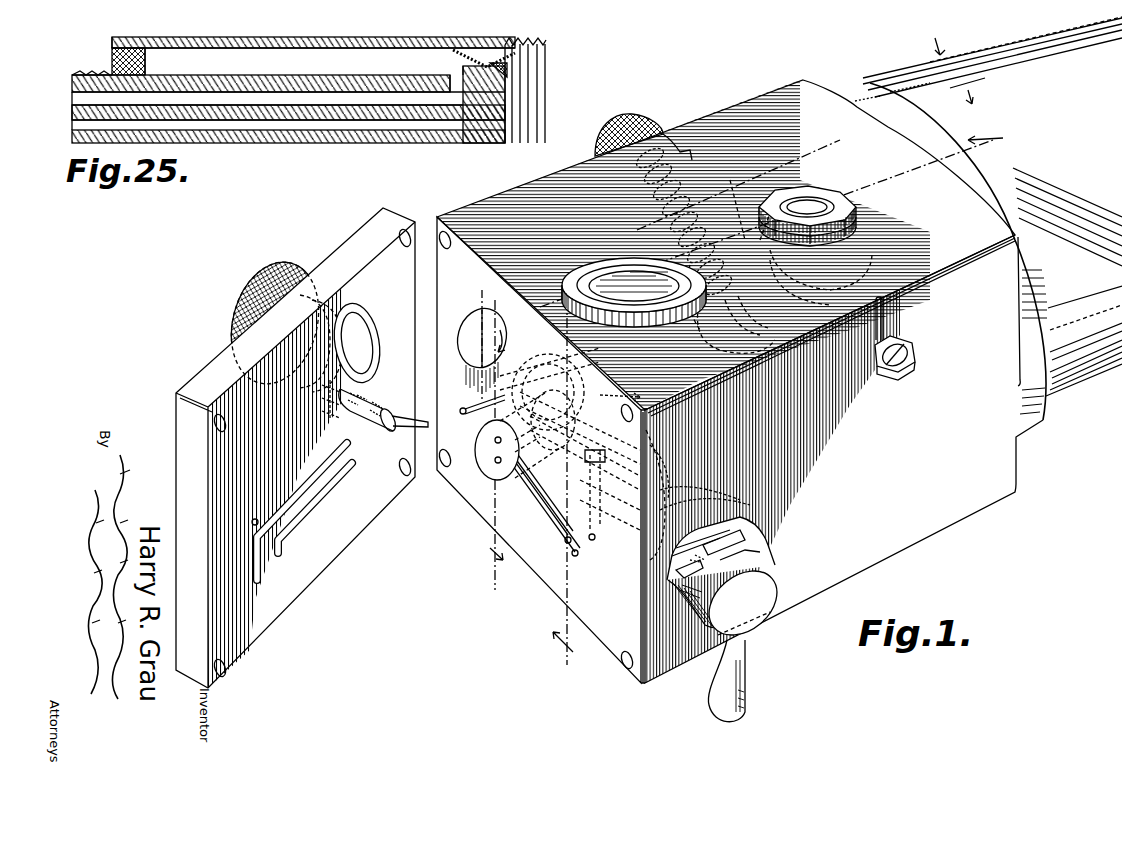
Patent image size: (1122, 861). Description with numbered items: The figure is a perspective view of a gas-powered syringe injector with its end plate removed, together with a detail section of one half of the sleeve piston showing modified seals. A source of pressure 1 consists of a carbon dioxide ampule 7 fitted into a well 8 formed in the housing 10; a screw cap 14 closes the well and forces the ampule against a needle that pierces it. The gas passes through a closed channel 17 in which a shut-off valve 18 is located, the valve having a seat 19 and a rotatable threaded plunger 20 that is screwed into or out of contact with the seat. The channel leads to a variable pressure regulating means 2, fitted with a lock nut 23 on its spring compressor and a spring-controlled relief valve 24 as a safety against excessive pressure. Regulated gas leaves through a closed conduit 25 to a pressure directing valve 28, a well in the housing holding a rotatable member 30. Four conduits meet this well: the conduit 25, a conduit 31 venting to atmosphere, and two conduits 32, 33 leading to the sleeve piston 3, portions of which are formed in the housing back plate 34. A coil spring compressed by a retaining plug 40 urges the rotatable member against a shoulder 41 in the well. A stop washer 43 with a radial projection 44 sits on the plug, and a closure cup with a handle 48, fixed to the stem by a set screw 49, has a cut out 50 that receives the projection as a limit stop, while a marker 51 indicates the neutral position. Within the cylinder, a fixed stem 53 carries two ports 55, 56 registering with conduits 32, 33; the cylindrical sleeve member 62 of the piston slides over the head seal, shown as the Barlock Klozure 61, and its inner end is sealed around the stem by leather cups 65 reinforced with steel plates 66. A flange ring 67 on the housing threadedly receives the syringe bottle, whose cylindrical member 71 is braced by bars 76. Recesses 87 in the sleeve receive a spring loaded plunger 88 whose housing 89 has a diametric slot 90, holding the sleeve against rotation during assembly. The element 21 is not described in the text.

In FIG. 1, the source of pressure 1 is at (470, 325).
In FIG. 1, the pressure regulating means 2 is at (800, 178).
In FIG. 23, the sleeve piston 3 is at (355, 44).
In FIG. 1, the sleeve piston 3 is at (779, 353).
In FIG. 1, the carbon dioxide ampule 7 is at (470, 300).
In FIG. 1, the well 8 is at (509, 329).
In FIG. 1, the housing 10 is at (876, 476).
In FIG. 1, the screw plug or cap 14 is at (291, 265).
In FIG. 1, the conduit or closed channel 17 is at (735, 215).
In FIG. 1, the shut-off valve 18 is at (705, 200).
In FIG. 1, the seat 19 is at (731, 309).
In FIG. 1, the rotatable plunger 20 is at (688, 145).
In FIG. 1, the knurled lens mount ring 21 is at (622, 268).
In FIG. 1, the lock nut 23 is at (840, 200).
In FIG. 1, the pressure relief valve 24 is at (890, 335).
In FIG. 1, the closed conduit 25 is at (722, 380).
In FIG. 1, the pressure directing valve 28 is at (708, 499).
In FIG. 1, the rotatable member 30 is at (660, 478).
In FIG. 1, the conduit 31 is at (575, 553).
In FIG. 1, the conduit 32 is at (262, 562).
In FIG. 1, the conduit 33 is at (300, 512).
In FIG. 1, the housing back plate 34 is at (275, 635).
In FIG. 1, the retaining plug 40 is at (748, 528).
In FIG. 1, the shoulder 41 is at (750, 560).
In FIG. 1, the stop washer 43 is at (722, 598).
In FIG. 1, the radial projection 44 is at (743, 603).
In FIG. 1, the handle 48 is at (717, 697).
In FIG. 1, the set screw 49 is at (660, 582).
In FIG. 1, the cut out 50 is at (745, 545).
In FIG. 1, the marker 51 is at (760, 552).
In FIG. 23, the fixed piston or stem 53 is at (313, 108).
In FIG. 1, the fixed piston or stem 53 is at (552, 392).
In FIG. 23, the conduit or port 55 is at (367, 122).
In FIG. 1, the conduit or port 55 is at (566, 396).
In FIG. 23, the conduit or port 56 is at (412, 97).
In FIG. 1, the conduit or port 56 is at (580, 425).
In FIG. 23, the Barlock Klozure seal 61 is at (488, 55).
In FIG. 23, the cylindrical sleeve member 62 is at (285, 44).
In FIG. 23, the leather cups 65 is at (128, 48).
In FIG. 23, the steel plates 66 is at (150, 60).
In FIG. 1, the flange ring 67 is at (1000, 166).
In FIG. 1, the cylindrical member 71 is at (1070, 392).
In FIG. 1, the bars 76 is at (905, 80).
In FIG. 1, the recesses 87 is at (470, 372).
In FIG. 1, the spring loaded plunger 88 is at (393, 428).
In FIG. 1, the plunger housing 89 is at (365, 343).
In FIG. 1, the diametric slot 90 is at (338, 418).